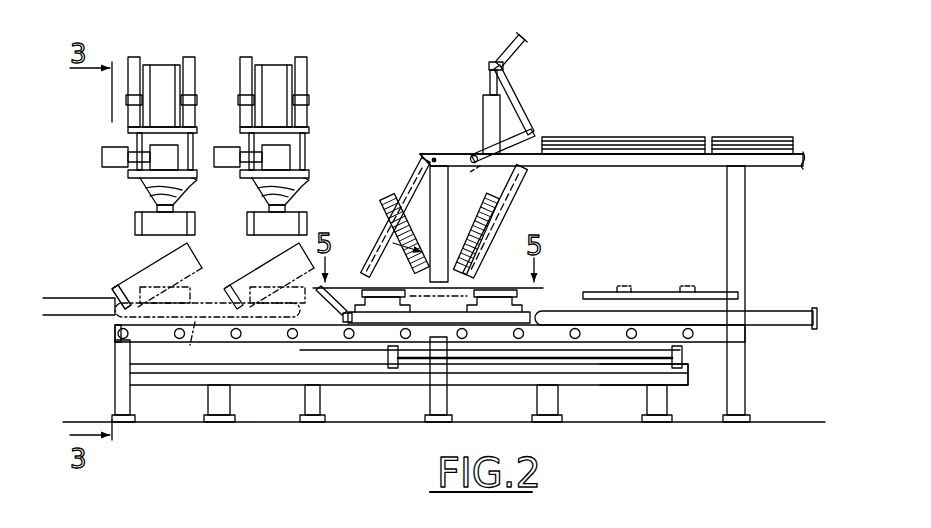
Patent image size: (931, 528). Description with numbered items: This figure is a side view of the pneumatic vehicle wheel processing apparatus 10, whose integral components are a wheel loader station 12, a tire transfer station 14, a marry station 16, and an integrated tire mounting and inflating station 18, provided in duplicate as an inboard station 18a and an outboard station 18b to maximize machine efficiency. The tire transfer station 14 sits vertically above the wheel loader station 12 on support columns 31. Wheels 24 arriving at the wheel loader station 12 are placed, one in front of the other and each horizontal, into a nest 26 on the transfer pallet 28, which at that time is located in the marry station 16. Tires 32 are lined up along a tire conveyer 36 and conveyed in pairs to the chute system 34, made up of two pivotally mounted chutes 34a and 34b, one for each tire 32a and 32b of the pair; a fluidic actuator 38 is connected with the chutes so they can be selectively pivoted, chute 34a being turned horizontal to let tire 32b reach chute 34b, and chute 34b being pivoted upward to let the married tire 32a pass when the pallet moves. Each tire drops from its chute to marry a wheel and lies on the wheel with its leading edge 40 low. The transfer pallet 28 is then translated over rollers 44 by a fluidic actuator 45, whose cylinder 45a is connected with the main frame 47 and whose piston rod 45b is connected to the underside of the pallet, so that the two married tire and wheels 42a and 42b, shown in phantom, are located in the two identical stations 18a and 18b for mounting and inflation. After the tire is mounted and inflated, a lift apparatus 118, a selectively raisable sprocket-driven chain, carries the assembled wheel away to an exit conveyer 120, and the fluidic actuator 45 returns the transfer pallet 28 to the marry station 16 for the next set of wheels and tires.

The pneumatic vehicle wheel processing apparatus 10 is at (598, 44).
The wheel loader station 12 is at (776, 245).
The tire transfer station 14 is at (760, 106).
The marry station 16 is at (388, 126).
The integrated tire mounting and inflating station 18 is at (309, 31).
The inboard integrated tire mounting and inflating station 18a is at (329, 76).
The outboard integrated tire mounting and inflating station 18b is at (94, 148).
The wheel 24 is at (383, 296).
The nest 26 is at (410, 297).
The transfer pallet 28 is at (510, 323).
The support columns 31 is at (748, 201).
The tire 32 is at (708, 133).
The tire 32a is at (494, 198).
The tire 32b is at (378, 198).
The chute system 34 is at (463, 121).
The chute 34a is at (533, 174).
The chute 34b is at (417, 166).
The tire conveyer 36 is at (798, 152).
The fluidic actuator 38 is at (522, 99).
The leading edge 40 is at (115, 284).
The married tire and wheel 42a is at (265, 264).
The married tire and wheel 42b is at (158, 265).
The rollers 44 is at (306, 350).
The fluidic actuator 45 is at (478, 375).
The cylinder 45a is at (595, 362).
The piston rod 45b is at (385, 368).
The main frame 47 is at (681, 386).
The lift apparatus 118 is at (202, 325).
The exit conveyer 120 is at (67, 298).